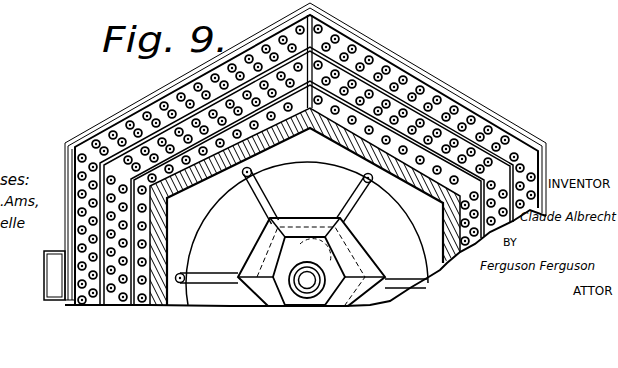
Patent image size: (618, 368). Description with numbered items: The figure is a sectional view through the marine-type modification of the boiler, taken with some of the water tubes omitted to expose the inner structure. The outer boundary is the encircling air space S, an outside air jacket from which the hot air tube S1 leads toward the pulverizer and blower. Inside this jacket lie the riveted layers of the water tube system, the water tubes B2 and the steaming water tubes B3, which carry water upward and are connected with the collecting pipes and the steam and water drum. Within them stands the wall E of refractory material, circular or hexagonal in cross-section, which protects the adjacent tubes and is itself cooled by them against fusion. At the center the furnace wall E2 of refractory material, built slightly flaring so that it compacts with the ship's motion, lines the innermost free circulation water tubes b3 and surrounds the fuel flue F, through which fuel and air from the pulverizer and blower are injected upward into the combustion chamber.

The encircling air space S is at (156, 90).
The water tubes B2 is at (83, 173).
The steaming water tubes B3 is at (343, 86).
The wall or column of refractory material E is at (168, 222).
The furnace wall of refractory material E2 is at (358, 247).
The fuel flue F is at (307, 280).
The water tubes b3 is at (262, 193).
The hot air tube S1 is at (53, 277).